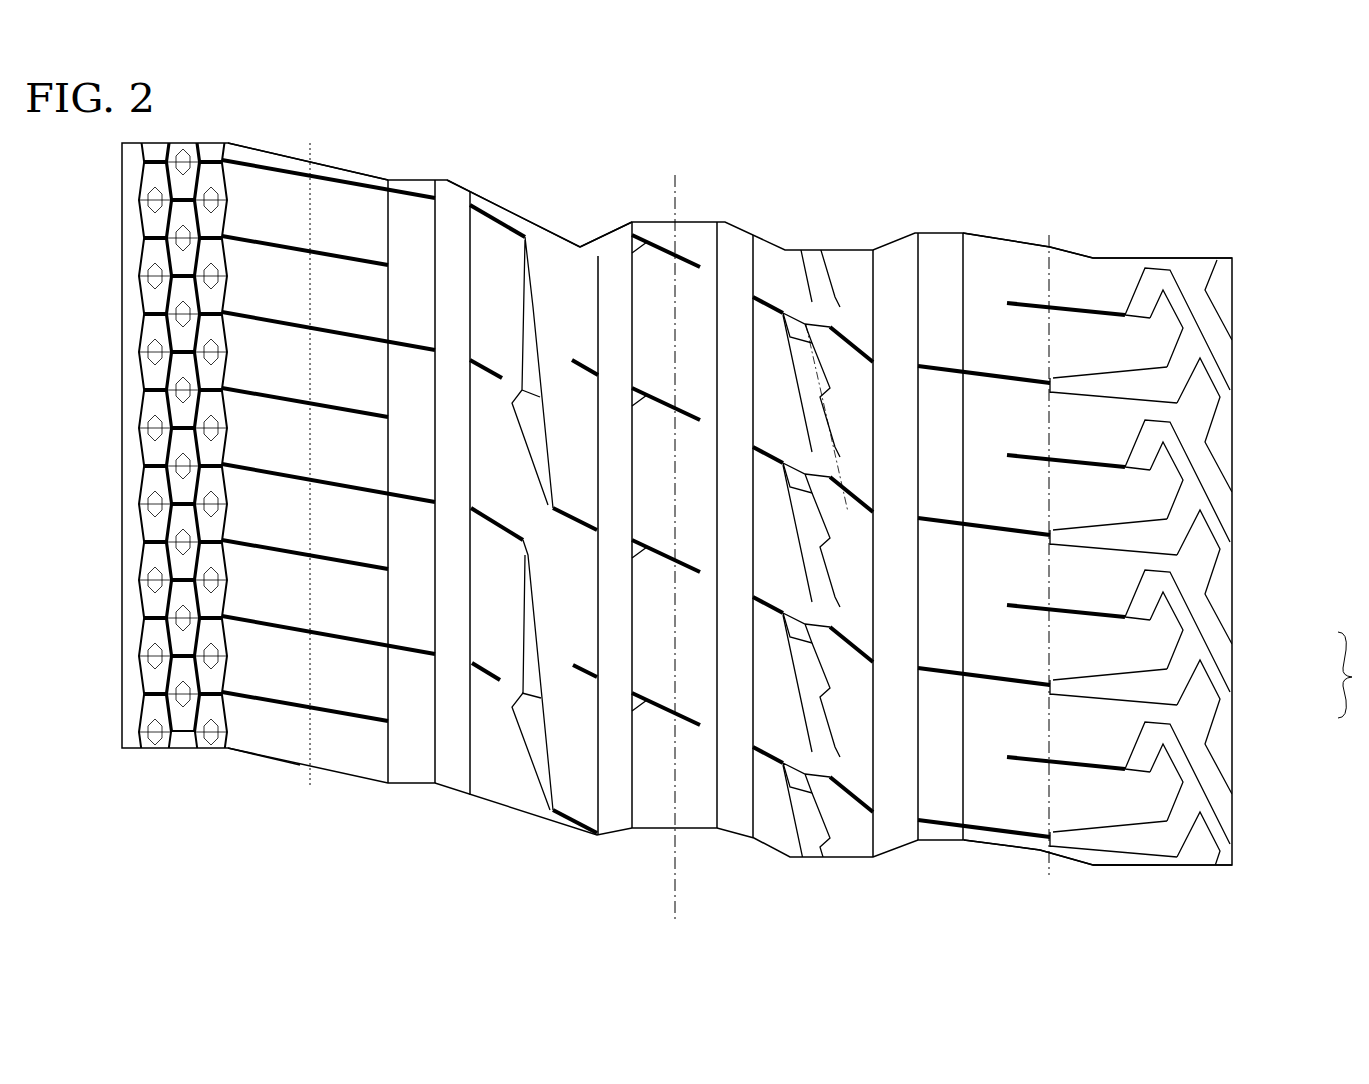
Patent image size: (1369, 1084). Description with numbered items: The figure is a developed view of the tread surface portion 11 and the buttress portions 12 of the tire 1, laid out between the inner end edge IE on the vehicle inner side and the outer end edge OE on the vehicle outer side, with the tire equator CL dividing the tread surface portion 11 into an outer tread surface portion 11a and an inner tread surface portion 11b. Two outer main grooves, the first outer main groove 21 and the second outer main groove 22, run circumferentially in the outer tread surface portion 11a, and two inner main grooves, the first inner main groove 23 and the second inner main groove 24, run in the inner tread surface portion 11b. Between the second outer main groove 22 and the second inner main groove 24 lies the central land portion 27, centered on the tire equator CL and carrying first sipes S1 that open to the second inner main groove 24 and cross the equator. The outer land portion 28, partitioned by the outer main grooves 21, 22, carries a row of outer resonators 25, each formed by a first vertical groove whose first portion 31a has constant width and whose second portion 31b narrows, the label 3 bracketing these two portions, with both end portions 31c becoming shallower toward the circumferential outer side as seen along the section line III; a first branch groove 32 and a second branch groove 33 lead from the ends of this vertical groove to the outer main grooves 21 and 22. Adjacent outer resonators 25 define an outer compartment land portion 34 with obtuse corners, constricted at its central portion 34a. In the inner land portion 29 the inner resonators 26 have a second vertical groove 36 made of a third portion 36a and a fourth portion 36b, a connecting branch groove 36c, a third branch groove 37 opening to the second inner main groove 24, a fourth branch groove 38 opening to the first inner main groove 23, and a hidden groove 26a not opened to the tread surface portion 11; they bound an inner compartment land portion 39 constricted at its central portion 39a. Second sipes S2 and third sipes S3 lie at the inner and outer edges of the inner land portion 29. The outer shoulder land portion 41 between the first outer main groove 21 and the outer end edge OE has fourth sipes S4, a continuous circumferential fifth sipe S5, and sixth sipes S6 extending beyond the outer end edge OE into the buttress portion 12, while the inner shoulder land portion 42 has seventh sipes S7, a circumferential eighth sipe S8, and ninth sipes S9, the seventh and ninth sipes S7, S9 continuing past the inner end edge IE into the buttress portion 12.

The tire 1 is at (1228, 150).
The shoulder land portion 3 is at (1352, 675).
The tread surface portion 11 is at (1044, 862).
The outer tread surface portion 11a is at (1023, 222).
The inner tread surface portion 11b is at (340, 136).
The buttress portion 12 is at (229, 760).
The first outer main groove 21 is at (893, 245).
The second outer main groove 22 is at (738, 235).
The first inner main groove 23 is at (440, 180).
The second inner main groove 24 is at (613, 235).
The outer resonator 25 is at (800, 250).
The inner resonator 26 is at (520, 202).
The hidden groove 26a is at (520, 290).
The central land portion 27 is at (698, 225).
The outer land portion 28 is at (843, 250).
The inner land portion 29 is at (555, 240).
The first portion 31a is at (1030, 718).
The second portion 31b is at (1035, 660).
The end portion 31c is at (788, 760).
The first branch groove 32 is at (868, 815).
The second branch groove 33 is at (755, 755).
The outer compartment land portion 34 is at (1012, 500).
The central portion 34a is at (1020, 575).
The second vertical groove 36 is at (555, 915).
The third portion 36a is at (538, 700).
The fourth portion 36b is at (520, 695).
The connecting branch groove 36c is at (490, 548).
The third branch groove 37 is at (576, 828).
The fourth branch groove 38 is at (460, 548).
The inner compartment land portion 39 is at (460, 467).
The central portion 39a is at (533, 518).
The outer shoulder land portion 41 is at (990, 240).
The inner shoulder land portion 42 is at (352, 178).
The first sipe S1 is at (692, 728).
The second sipe S2 is at (598, 690).
The third sipe S3 is at (488, 640).
The fourth sipe S4 is at (920, 790).
The fifth sipe S5 is at (966, 822).
The sixth sipe S6 is at (1010, 762).
The seventh sipe S7 is at (270, 623).
The eighth sipe S8 is at (388, 740).
The ninth sipe S9 is at (330, 713).
The tire equator CL is at (672, 530).
The inner end edge IE is at (308, 141).
The outer end edge OE is at (1050, 236).
The section line III is at (798, 318).